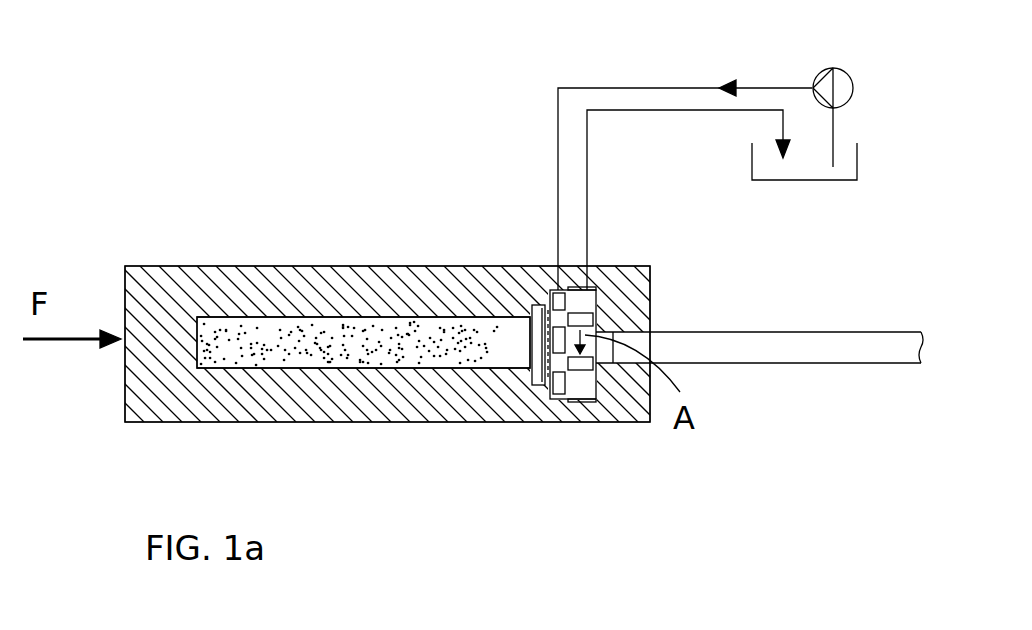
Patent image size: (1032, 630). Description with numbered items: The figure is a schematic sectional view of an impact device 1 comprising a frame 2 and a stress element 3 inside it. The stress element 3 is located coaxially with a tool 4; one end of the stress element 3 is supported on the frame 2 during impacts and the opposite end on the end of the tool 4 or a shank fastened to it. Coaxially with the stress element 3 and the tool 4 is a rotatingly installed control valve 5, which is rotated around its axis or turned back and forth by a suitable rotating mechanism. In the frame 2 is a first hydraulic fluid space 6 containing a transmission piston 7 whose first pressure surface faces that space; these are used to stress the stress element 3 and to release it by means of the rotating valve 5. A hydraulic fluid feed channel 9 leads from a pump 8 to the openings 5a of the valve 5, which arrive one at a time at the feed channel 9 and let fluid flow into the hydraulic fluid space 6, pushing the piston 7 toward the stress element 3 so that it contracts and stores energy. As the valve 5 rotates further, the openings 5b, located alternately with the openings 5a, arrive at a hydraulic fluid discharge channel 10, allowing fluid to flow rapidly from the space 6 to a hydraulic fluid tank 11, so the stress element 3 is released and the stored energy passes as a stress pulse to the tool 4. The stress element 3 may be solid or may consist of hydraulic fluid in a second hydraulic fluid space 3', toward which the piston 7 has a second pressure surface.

The impact device 1 is at (211, 233).
The frame 2 is at (347, 423).
The stress element 3 is at (363, 280).
The second hydraulic fluid space 3' is at (363, 288).
The tool 4 is at (743, 352).
The control valve 5 is at (602, 300).
The openings 5a is at (558, 393).
The openings 5b is at (585, 401).
The first hydraulic fluid space 6 is at (543, 388).
The transmission piston 7 is at (546, 318).
The pump 8 is at (827, 66).
The hydraulic fluid feed channel 9 is at (556, 135).
The hydraulic fluid discharge channel 10 is at (600, 112).
The hydraulic fluid tank 11 is at (812, 181).